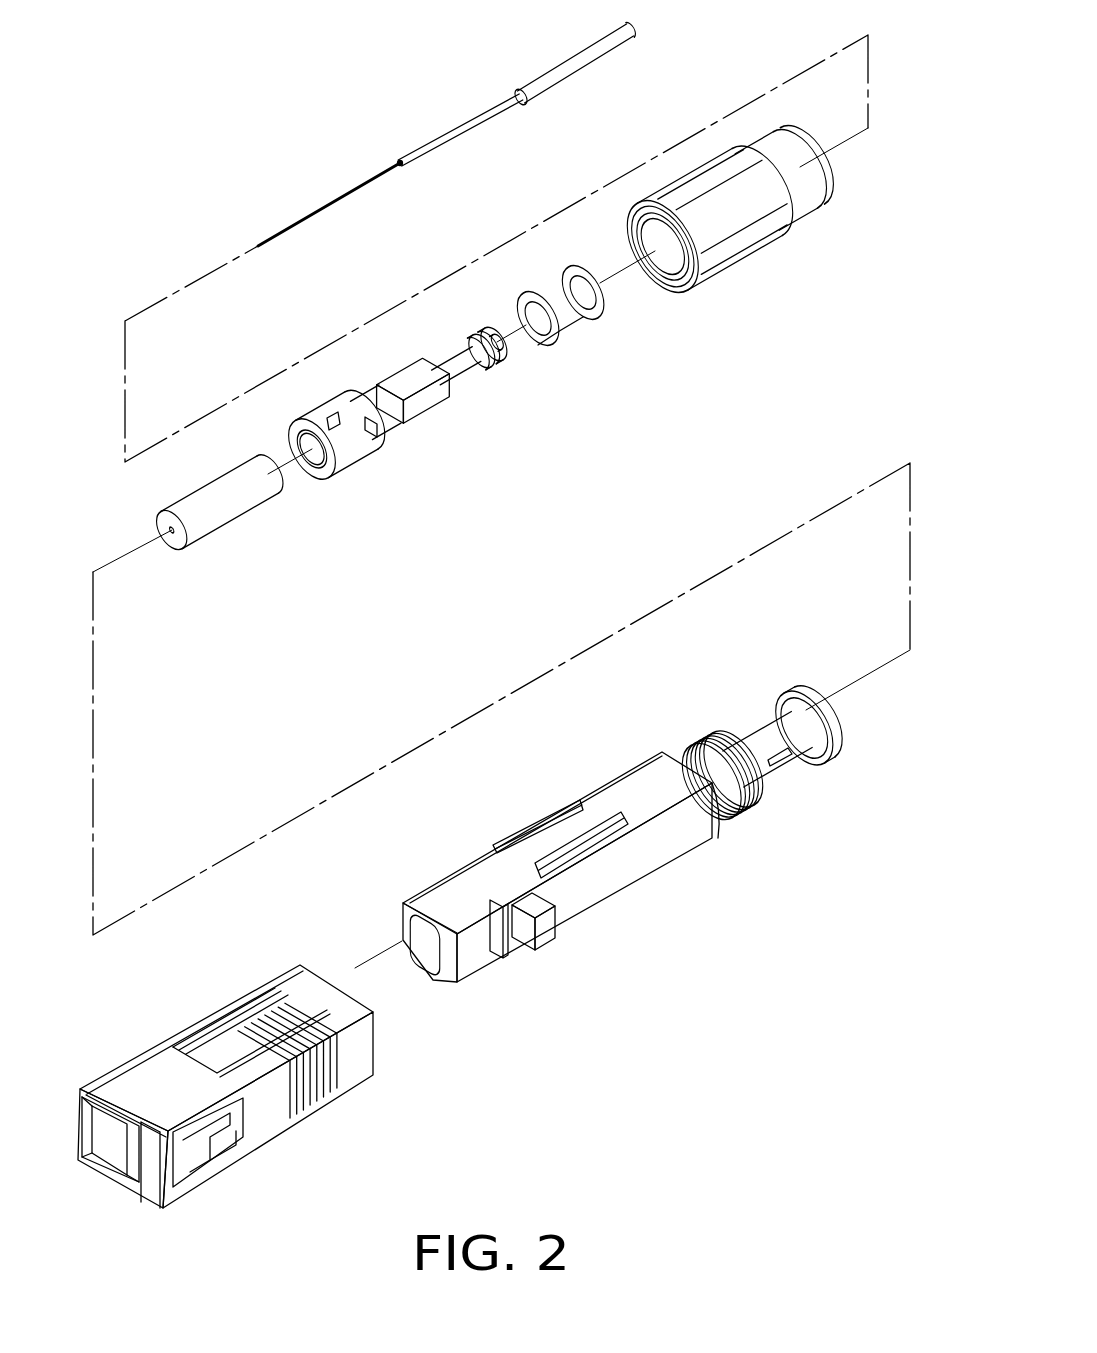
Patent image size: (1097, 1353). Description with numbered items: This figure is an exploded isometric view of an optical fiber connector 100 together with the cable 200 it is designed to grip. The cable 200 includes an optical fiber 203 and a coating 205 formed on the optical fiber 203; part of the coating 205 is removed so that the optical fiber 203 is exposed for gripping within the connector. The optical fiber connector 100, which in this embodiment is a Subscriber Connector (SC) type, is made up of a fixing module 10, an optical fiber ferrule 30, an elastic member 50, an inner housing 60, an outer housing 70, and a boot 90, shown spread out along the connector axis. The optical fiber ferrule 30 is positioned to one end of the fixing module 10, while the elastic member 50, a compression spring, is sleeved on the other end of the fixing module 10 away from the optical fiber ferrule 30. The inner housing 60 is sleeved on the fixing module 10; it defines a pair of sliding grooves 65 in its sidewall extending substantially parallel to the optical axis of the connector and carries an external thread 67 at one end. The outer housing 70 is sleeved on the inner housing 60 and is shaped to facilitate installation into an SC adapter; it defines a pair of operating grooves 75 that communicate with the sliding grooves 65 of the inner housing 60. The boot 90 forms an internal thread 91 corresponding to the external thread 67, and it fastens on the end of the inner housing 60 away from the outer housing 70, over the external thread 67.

The optical fiber connector 100 is at (628, 1015).
The cable 200 is at (440, 72).
The optical fiber 203 is at (370, 180).
The coating 205 is at (437, 143).
The fixing module 10 is at (433, 397).
The optical fiber ferrule 30 is at (197, 517).
The elastic member 50 is at (583, 315).
The inner housing 60 is at (600, 770).
The sliding grooves 65 is at (592, 850).
The external thread 67 is at (748, 815).
The outer housing 70 is at (313, 982).
The operating grooves 75 is at (200, 1030).
The boot 90 is at (723, 263).
The internal thread 91 is at (672, 290).